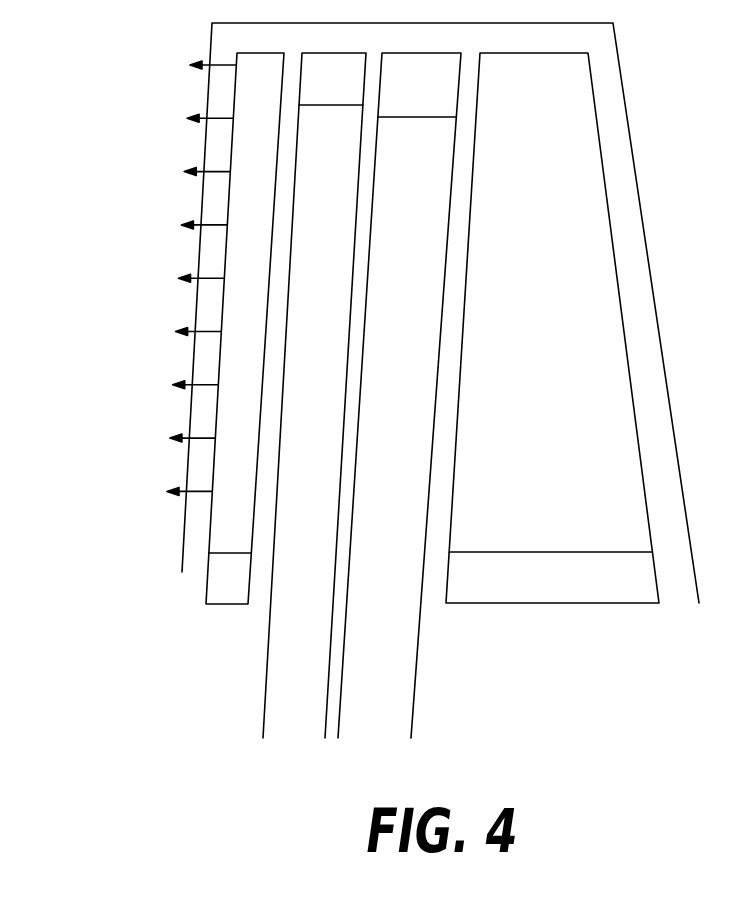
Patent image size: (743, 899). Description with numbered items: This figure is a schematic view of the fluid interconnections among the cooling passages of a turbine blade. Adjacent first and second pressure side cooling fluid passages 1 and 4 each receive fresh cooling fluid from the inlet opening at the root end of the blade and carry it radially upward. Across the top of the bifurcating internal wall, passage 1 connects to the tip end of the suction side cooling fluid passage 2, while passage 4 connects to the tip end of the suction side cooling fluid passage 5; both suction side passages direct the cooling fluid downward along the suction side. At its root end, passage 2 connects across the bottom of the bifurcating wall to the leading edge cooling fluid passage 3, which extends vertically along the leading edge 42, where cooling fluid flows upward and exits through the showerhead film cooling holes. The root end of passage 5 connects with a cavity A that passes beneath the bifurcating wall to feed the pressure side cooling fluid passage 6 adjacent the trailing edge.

The pressure side cooling fluid passage 1 is at (314, 395).
The suction side cooling fluid passage 2 is at (286, 331).
The leading edge cooling fluid passage 3 is at (245, 328).
The pressure side cooling fluid passage 4 is at (399, 395).
The suction side cooling fluid passage 5 is at (417, 97).
The pressure side cooling fluid passage 6 is at (552, 328).
The cavity A is at (550, 574).
The leading edge 42 is at (115, 323).